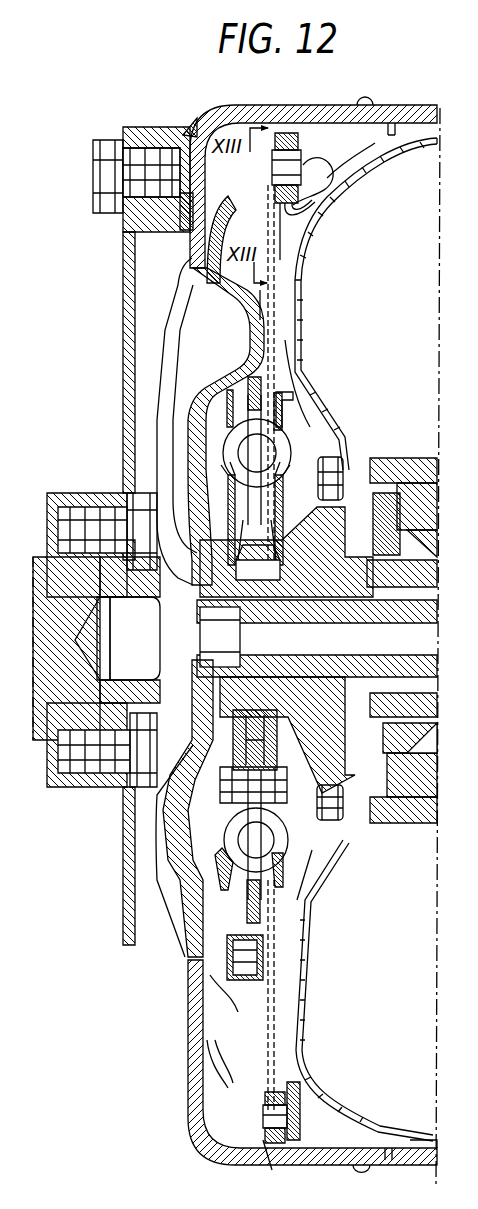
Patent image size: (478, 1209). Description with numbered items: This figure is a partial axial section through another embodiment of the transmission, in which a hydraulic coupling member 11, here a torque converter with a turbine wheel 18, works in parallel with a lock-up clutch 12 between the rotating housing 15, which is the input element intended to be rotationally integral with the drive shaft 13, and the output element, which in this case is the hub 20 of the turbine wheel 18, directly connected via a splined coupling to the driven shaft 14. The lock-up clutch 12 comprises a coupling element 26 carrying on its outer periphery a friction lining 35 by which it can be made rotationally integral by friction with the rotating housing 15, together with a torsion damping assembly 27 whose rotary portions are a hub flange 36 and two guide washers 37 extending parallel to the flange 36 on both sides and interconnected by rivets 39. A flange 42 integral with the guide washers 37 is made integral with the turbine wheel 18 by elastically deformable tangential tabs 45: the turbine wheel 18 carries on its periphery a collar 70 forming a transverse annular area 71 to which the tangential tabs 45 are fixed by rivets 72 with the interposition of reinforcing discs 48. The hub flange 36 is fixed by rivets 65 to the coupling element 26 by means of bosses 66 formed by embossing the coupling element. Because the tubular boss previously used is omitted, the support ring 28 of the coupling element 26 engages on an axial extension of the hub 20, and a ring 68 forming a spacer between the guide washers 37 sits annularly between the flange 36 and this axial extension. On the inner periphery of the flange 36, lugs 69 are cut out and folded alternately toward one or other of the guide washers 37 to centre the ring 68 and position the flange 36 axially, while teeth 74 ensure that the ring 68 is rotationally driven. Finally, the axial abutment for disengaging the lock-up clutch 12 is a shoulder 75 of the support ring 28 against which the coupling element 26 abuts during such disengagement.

The hydraulic coupling member 11 is at (333, 142).
The lock-up clutch 12 is at (252, 303).
The drive shaft 13 is at (40, 557).
The driven shaft 14 is at (433, 615).
The rotating housing 15 is at (190, 1087).
The turbine wheel 18 is at (442, 176).
The hub 20 is at (357, 468).
The coupling element 26 is at (252, 332).
The torsion damping assembly 27 is at (283, 407).
The support ring 28 is at (190, 603).
The friction lining 35 is at (190, 273).
The flange 36 is at (302, 907).
The guide washers 37 is at (192, 505).
The rivets 39 is at (288, 800).
The flange 42 is at (280, 258).
The tangential tab 45 is at (267, 190).
The reinforcing discs 48 is at (315, 200).
The rivets 65 is at (227, 950).
The bosses 66 is at (233, 987).
The ring 68 is at (285, 572).
The lugs 69 is at (258, 571).
The collar 70 is at (272, 1140).
The annular area 71 is at (285, 145).
The rivets 72 is at (334, 178).
The teeth 74 is at (258, 742).
The shoulder 75 is at (222, 720).